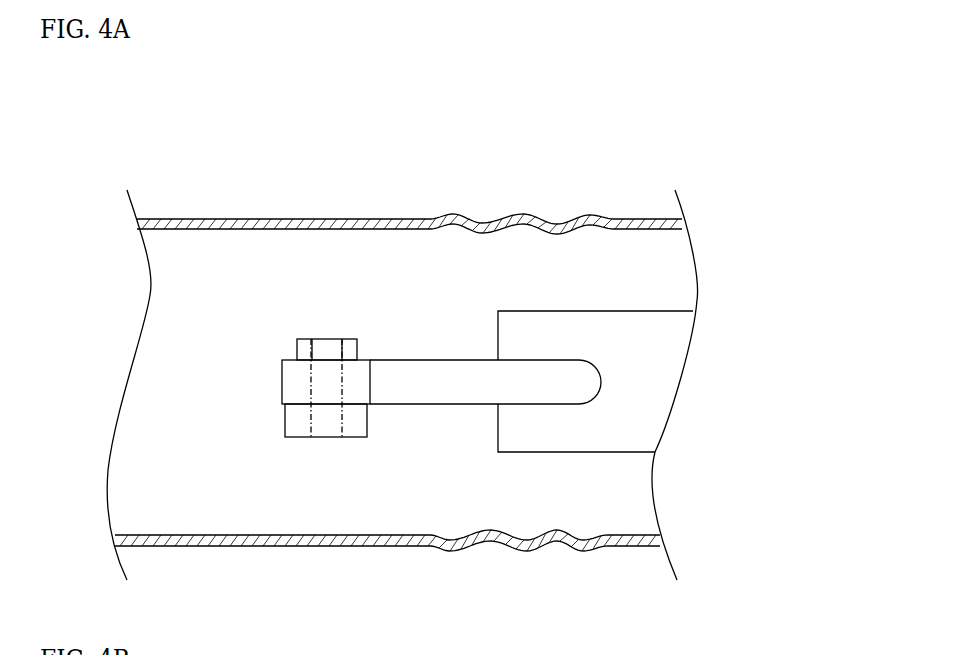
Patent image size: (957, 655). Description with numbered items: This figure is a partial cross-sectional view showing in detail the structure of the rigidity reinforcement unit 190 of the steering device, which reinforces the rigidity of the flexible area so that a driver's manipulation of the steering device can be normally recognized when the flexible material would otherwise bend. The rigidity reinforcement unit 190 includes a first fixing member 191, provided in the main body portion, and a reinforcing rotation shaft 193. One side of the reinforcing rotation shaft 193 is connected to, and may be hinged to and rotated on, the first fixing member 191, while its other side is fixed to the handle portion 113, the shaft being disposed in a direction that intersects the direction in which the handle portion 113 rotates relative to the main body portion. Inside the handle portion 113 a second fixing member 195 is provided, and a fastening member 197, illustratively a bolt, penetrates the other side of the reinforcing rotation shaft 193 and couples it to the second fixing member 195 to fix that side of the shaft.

The handle portion 113 is at (336, 557).
The rigidity reinforcement unit 190 is at (494, 303).
The first fixing member 191 is at (650, 367).
The reinforcing rotation shaft 193 is at (421, 382).
The second fixing member 195 is at (300, 422).
The fastening member 197 is at (330, 351).